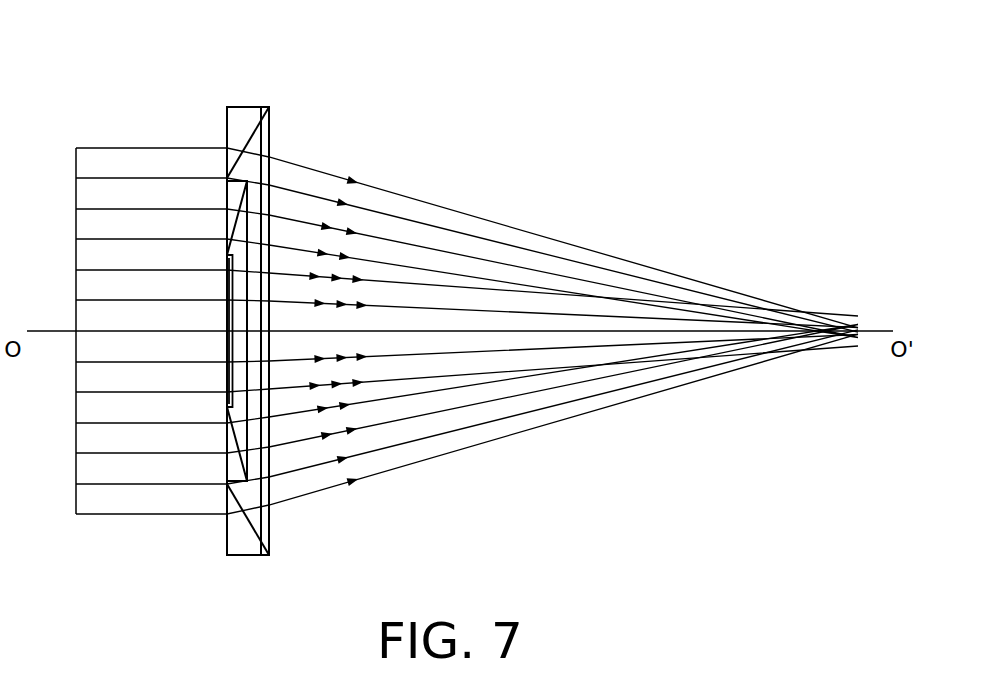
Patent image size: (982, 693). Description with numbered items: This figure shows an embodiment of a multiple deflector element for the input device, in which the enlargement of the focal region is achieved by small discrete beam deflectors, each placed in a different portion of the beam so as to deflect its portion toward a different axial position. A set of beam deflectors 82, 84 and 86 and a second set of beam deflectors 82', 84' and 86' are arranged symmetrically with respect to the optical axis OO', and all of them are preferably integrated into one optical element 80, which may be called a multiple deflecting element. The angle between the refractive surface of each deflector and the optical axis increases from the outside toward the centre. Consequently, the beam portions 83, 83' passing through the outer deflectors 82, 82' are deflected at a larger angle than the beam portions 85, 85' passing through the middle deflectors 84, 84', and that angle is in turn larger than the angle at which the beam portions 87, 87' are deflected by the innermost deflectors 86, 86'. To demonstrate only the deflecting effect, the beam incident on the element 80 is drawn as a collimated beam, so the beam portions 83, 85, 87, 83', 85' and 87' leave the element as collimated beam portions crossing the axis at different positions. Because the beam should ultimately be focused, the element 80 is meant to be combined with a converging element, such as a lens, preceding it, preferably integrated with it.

The optical element 80 is at (258, 72).
The beam deflector 82 is at (219, 137).
The beam deflector 82' is at (214, 519).
The beam portion 83 is at (542, 220).
The beam portion 83' is at (542, 442).
The beam deflector 84 is at (197, 256).
The beam deflector 84' is at (195, 406).
The beam portion 85 is at (542, 247).
The beam portion 85' is at (542, 416).
The beam deflector 86 is at (190, 293).
The beam deflector 86' is at (188, 369).
The beam portion 87 is at (542, 252).
The beam portion 87' is at (542, 411).